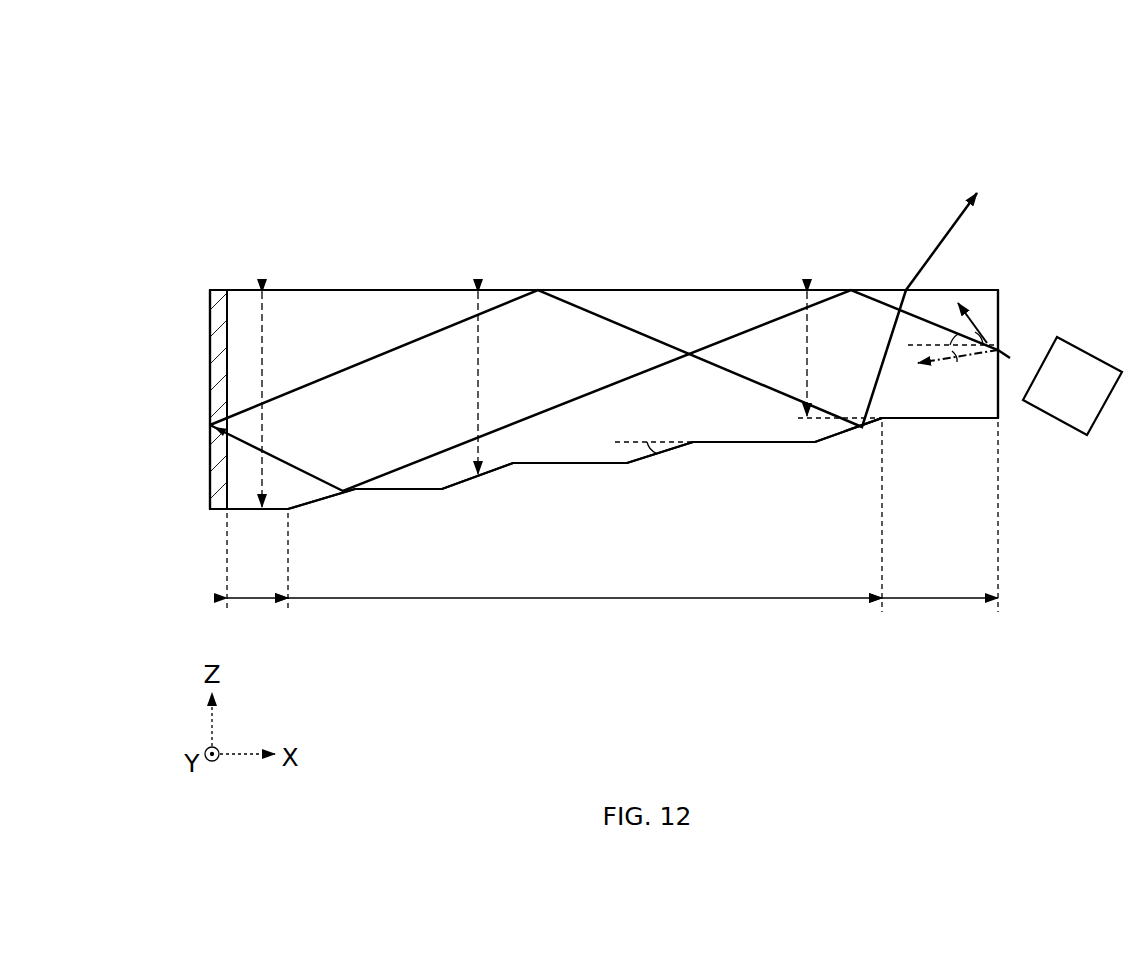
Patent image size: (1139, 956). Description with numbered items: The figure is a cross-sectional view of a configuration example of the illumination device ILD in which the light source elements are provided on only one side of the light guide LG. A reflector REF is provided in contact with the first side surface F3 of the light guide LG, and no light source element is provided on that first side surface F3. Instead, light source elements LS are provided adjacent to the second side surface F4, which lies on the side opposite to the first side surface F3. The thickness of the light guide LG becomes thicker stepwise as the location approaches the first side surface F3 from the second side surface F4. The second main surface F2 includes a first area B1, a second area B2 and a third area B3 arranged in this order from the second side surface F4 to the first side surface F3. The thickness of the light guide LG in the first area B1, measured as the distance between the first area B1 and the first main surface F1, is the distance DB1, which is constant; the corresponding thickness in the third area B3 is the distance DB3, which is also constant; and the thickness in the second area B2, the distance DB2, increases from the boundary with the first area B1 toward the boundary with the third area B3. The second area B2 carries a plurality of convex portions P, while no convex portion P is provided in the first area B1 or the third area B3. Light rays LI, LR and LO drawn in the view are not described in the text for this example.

The illumination device ILD is at (852, 127).
The light guide LG is at (355, 318).
The reflector REF is at (221, 305).
The light source elements LS is at (1093, 353).
The first main surface F1 is at (640, 263).
The second main surface F2 is at (580, 485).
The first side surface F3 is at (213, 525).
The second side surface F4 is at (1018, 327).
The incident light ray LI is at (923, 317).
The reflected light ray LR is at (882, 353).
The outgoing light ray LO is at (930, 252).
The convex portion P is at (847, 447).
The first distance DB1 is at (840, 355).
The second distance DB2 is at (506, 383).
The third distance DB3 is at (289, 399).
The first area B1 is at (940, 529).
The second area B2 is at (585, 529).
The third area B3 is at (257, 575).